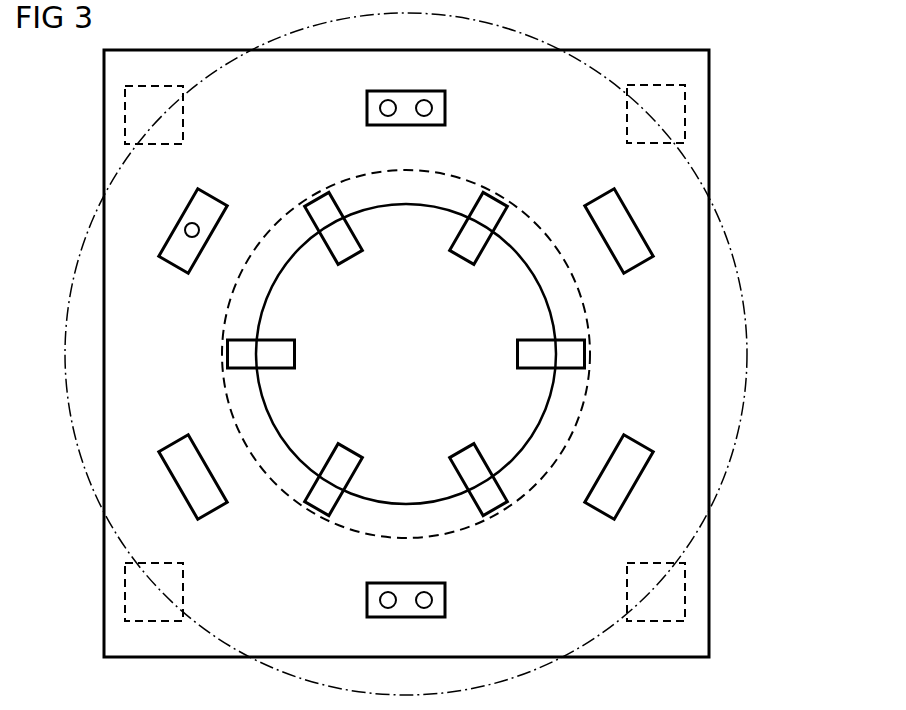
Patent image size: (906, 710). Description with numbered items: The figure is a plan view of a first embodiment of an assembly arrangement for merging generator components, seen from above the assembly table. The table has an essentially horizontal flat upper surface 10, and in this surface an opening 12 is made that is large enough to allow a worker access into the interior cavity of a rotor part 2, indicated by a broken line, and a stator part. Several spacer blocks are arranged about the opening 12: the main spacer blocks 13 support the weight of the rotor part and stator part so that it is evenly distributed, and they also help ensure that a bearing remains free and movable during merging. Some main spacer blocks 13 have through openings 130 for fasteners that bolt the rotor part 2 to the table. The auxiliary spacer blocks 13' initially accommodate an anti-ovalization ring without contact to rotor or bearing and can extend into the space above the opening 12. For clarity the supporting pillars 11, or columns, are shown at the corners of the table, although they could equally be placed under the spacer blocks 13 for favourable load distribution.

The rotor part 2 is at (746, 350).
The upper surface 10 is at (697, 291).
The supporting pillars 11 is at (178, 122).
The opening 12 is at (394, 366).
The main spacer blocks 13 is at (409, 362).
The auxiliary spacer blocks 13' is at (406, 353).
The through openings 130 is at (424, 115).